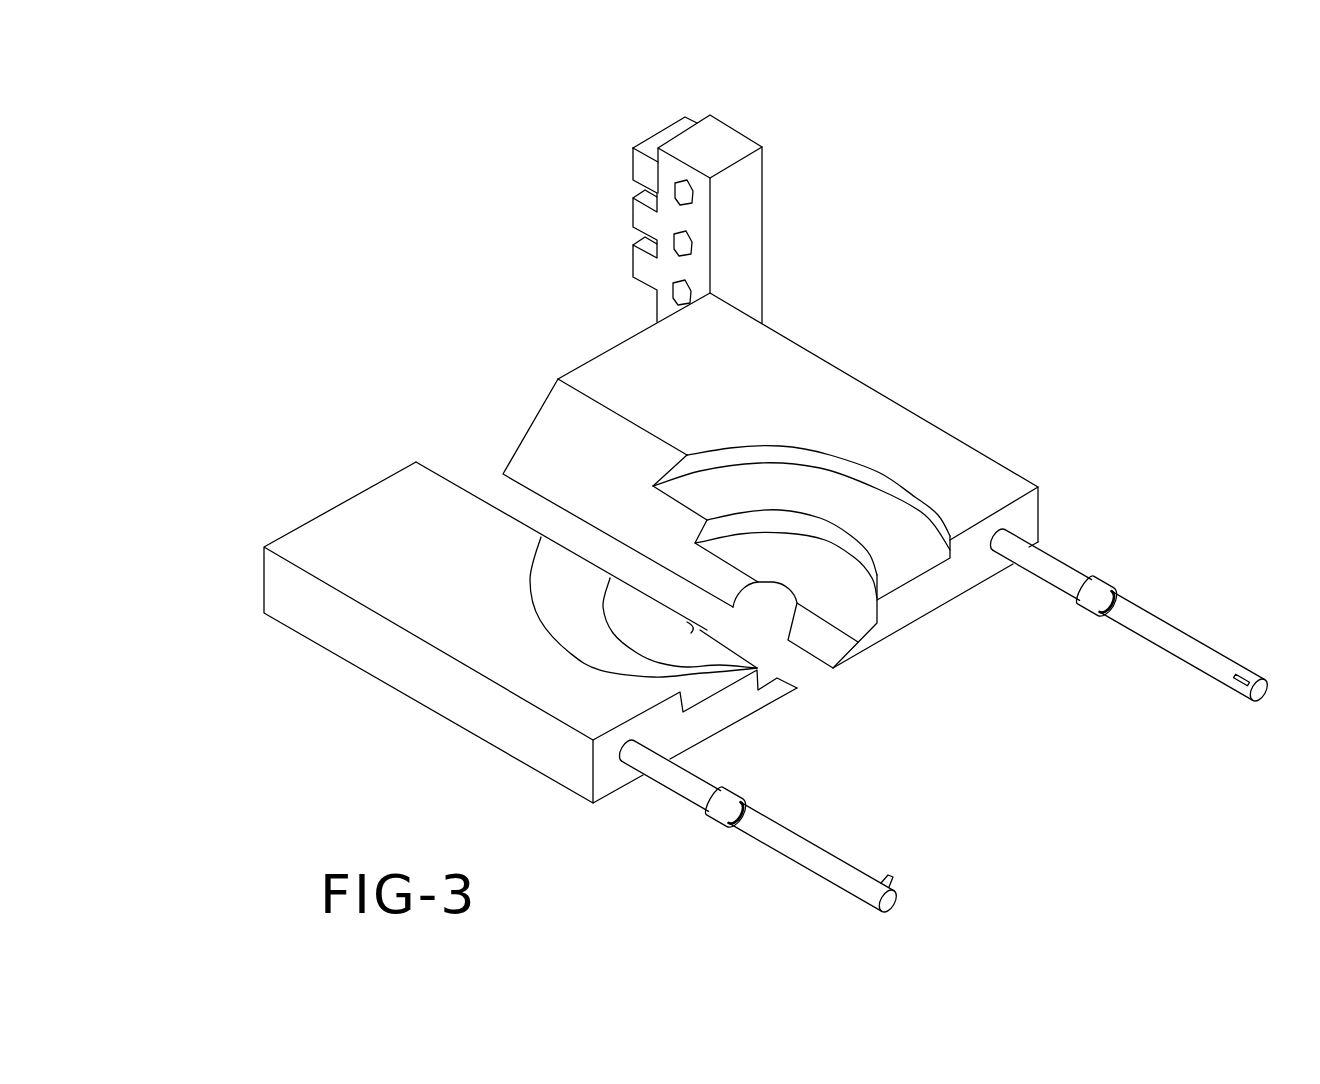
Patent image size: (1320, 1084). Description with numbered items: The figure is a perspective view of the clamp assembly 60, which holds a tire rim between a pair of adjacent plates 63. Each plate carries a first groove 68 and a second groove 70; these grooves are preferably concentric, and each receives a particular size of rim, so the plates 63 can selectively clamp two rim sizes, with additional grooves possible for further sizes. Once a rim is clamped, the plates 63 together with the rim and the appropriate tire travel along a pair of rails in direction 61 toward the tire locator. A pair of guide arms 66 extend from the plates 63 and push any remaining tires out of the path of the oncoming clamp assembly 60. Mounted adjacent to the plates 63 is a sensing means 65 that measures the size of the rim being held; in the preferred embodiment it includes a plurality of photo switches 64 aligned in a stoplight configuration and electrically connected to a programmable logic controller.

The clamp assembly 60 is at (980, 268).
The direction 61 is at (696, 908).
The plates 63 is at (755, 358).
The photo switches 64 is at (690, 186).
The sensing means 65 is at (606, 168).
The guide arms 66 is at (827, 853).
The first groove 68 is at (832, 505).
The second groove 70 is at (852, 607).